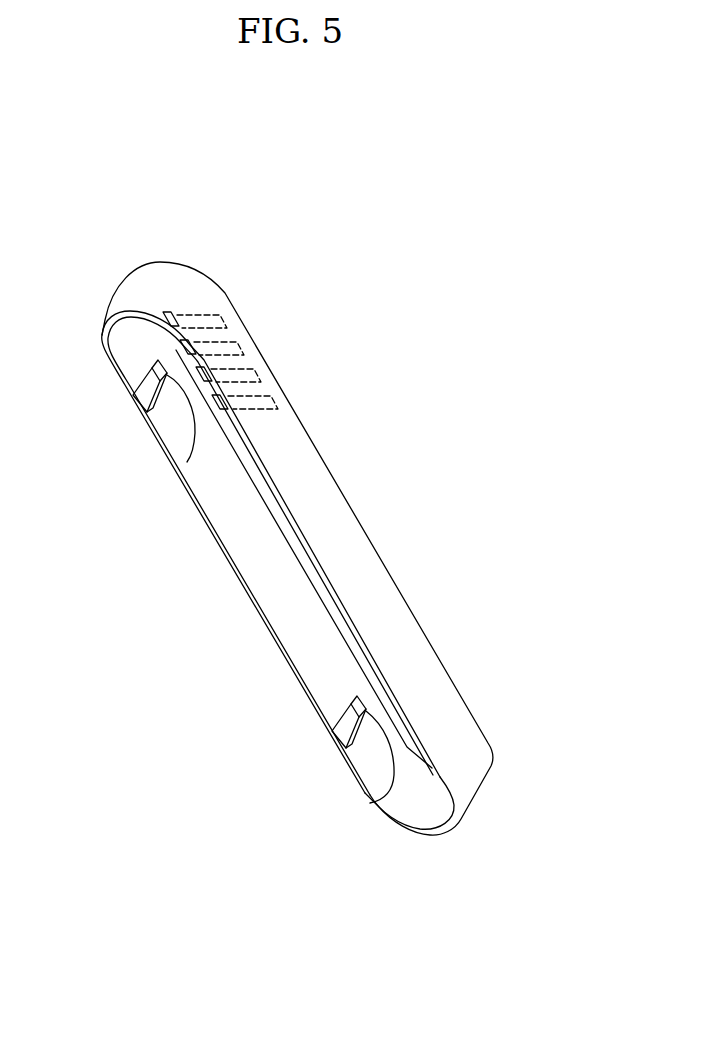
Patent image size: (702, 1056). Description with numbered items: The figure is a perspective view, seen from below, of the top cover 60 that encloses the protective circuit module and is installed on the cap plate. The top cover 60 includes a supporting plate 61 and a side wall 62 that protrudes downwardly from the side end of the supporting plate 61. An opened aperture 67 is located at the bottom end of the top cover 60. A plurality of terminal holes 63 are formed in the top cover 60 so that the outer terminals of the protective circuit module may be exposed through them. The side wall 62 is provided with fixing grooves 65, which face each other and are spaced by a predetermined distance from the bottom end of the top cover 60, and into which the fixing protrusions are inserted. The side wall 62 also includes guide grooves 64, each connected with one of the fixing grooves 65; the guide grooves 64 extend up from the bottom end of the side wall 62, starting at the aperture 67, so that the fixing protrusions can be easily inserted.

The top cover 60 is at (432, 533).
The supporting plate 61 is at (313, 587).
The side wall 62 is at (250, 545).
The terminal holes 63 is at (270, 397).
The guide grooves 64 is at (147, 405).
The fixing grooves 65 is at (187, 462).
The opened aperture 67 is at (310, 697).